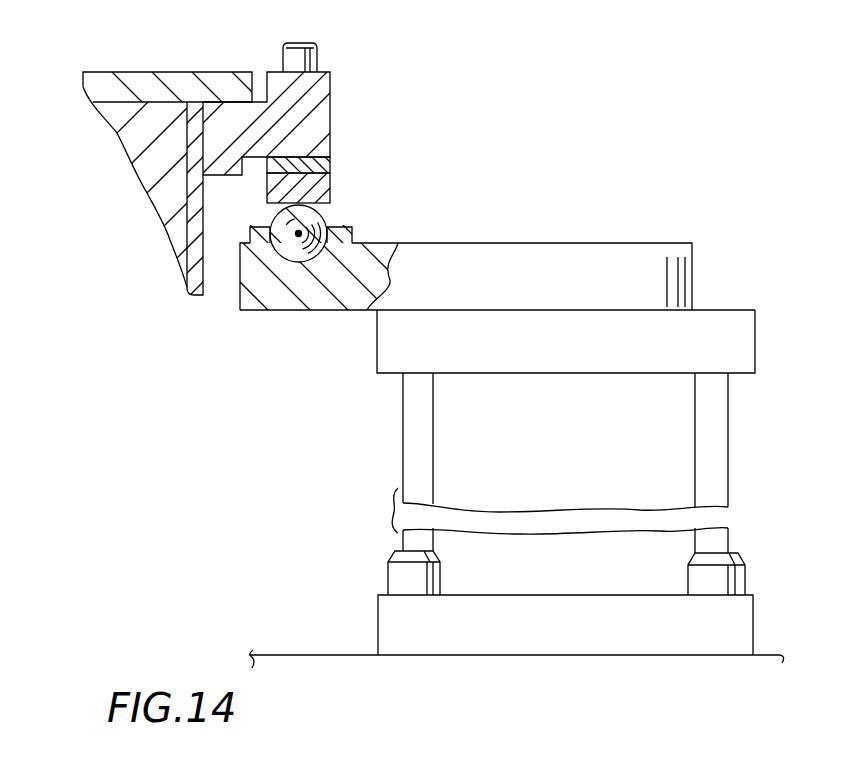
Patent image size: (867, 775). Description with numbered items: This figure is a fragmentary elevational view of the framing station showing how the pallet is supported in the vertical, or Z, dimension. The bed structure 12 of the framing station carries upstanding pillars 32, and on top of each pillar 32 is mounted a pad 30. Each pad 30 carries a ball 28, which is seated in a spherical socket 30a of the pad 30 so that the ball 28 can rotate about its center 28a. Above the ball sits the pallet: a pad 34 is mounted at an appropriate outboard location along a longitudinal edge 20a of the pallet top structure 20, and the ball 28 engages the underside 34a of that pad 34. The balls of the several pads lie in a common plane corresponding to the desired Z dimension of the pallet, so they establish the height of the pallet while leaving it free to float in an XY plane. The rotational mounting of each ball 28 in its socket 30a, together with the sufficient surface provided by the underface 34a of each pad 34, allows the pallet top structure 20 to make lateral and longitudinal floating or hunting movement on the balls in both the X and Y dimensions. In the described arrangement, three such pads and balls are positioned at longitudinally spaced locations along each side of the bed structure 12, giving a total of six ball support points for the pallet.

The bed structure 12 is at (307, 655).
The pallet top structure 20 is at (280, 200).
The longitudinal edge 20a is at (138, 72).
The ball 28 is at (381, 287).
The center of the ball 28a is at (301, 237).
The pad 30 is at (377, 200).
The spherical socket 30a is at (277, 249).
The pillar 32 is at (565, 466).
The pad 34 is at (330, 172).
The underside 34a is at (330, 202).